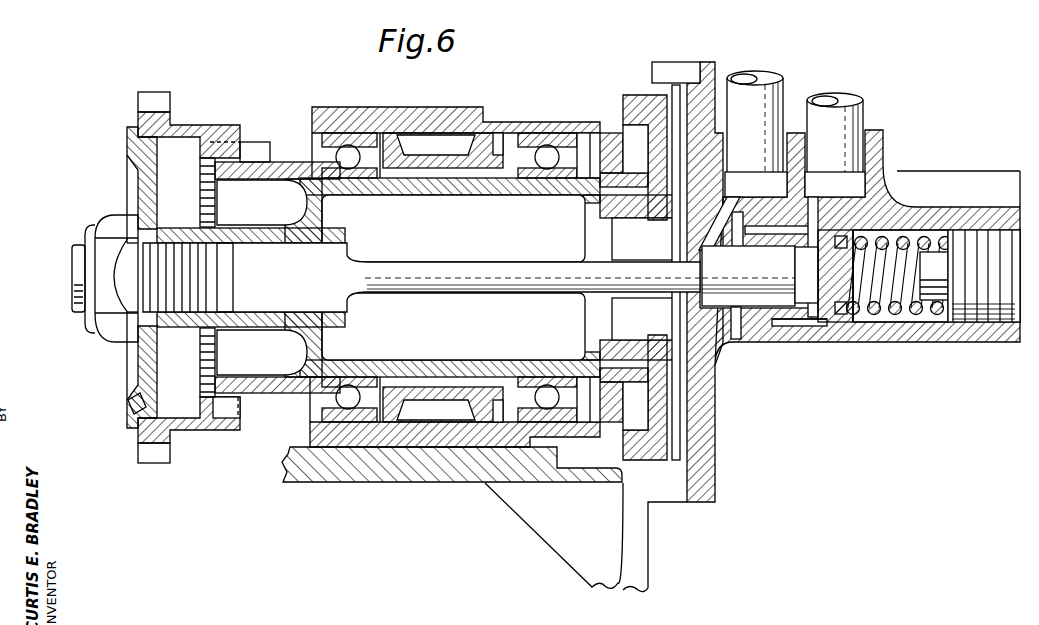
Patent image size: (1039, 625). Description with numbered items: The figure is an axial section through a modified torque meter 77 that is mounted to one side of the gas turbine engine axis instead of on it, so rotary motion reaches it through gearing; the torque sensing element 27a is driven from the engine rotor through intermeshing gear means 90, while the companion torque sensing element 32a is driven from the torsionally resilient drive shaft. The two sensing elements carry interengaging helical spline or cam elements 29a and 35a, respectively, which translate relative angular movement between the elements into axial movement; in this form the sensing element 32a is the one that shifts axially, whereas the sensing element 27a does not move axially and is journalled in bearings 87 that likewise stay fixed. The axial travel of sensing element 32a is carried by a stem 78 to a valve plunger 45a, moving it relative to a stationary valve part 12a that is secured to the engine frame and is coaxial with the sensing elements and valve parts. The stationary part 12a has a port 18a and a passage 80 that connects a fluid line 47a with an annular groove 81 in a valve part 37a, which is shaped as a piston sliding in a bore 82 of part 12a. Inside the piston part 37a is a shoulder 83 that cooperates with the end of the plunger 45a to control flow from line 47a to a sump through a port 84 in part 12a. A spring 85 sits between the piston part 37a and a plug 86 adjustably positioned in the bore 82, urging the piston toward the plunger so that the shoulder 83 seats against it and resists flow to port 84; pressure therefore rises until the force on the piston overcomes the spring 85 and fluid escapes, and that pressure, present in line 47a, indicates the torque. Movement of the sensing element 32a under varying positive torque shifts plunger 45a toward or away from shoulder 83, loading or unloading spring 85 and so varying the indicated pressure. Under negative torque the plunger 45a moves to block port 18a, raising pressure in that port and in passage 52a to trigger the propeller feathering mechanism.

The stationary valve part 12a is at (857, 343).
The port 18a is at (700, 222).
The torque sensing element 27a is at (312, 352).
The helical spline or cam element 29a is at (255, 420).
The torque sensing element 32a is at (220, 425).
The helical spline or cam element 35a is at (205, 400).
The valve part 37a is at (765, 320).
The valve plunger 45a is at (718, 282).
The fluid line 47a is at (862, 122).
The passage 52a is at (752, 70).
The torque meter 77 is at (400, 482).
The stem 78 is at (485, 295).
The passage 80 is at (814, 212).
The annular groove 81 is at (800, 324).
The bore 82 is at (913, 232).
The shoulder 83 is at (793, 247).
The port 84 is at (742, 340).
The spring 85 is at (895, 317).
The plug 86 is at (977, 318).
The bearings 87 is at (352, 204).
The gear means 90 is at (625, 97).